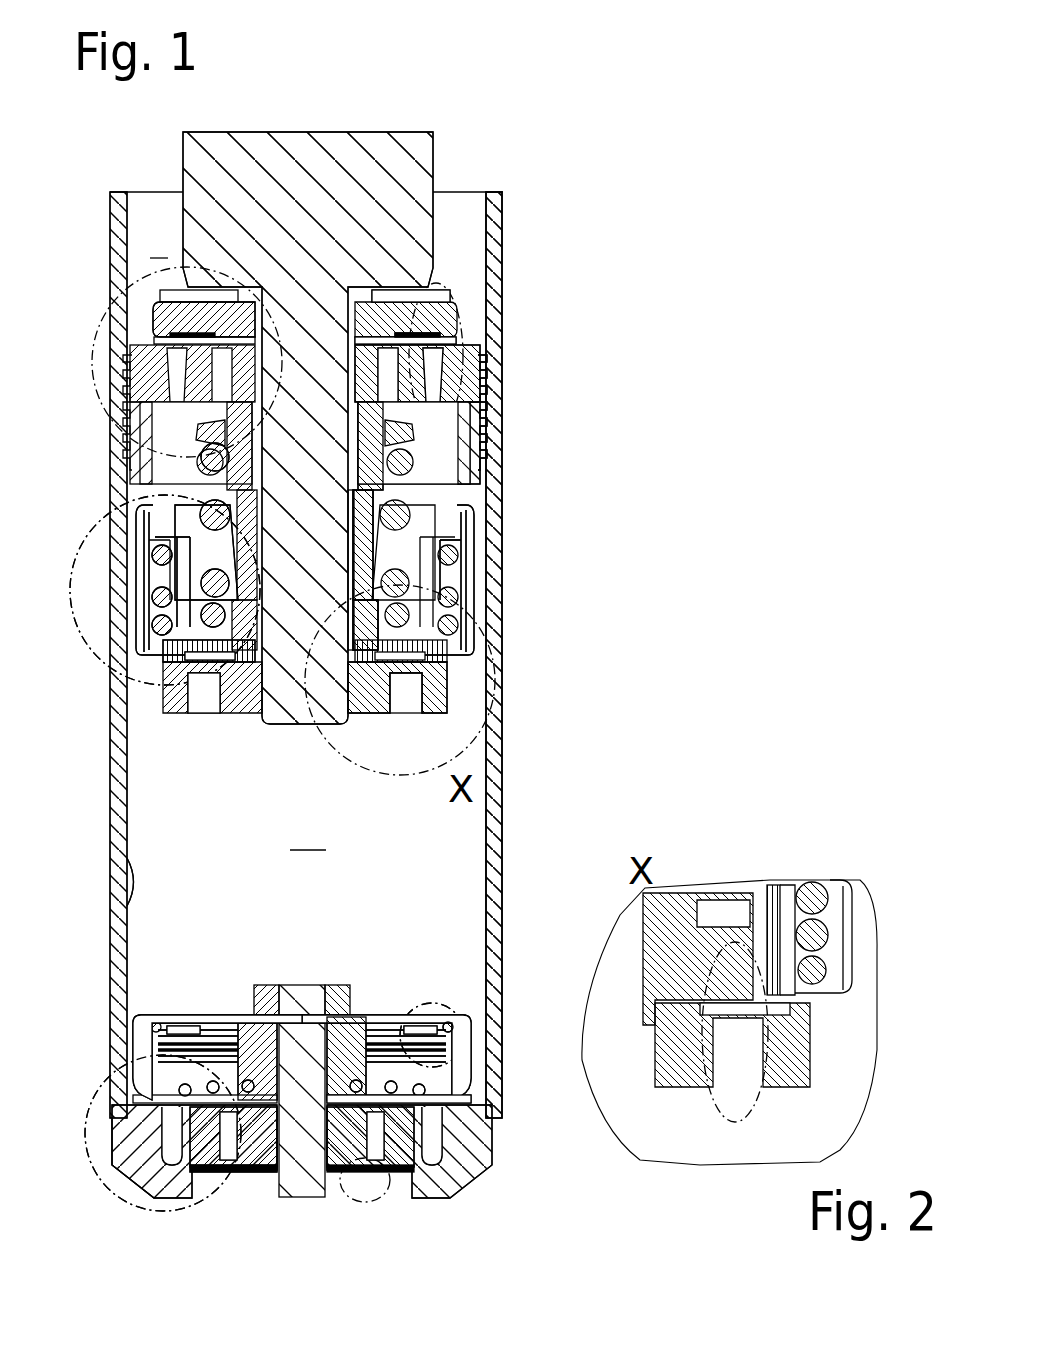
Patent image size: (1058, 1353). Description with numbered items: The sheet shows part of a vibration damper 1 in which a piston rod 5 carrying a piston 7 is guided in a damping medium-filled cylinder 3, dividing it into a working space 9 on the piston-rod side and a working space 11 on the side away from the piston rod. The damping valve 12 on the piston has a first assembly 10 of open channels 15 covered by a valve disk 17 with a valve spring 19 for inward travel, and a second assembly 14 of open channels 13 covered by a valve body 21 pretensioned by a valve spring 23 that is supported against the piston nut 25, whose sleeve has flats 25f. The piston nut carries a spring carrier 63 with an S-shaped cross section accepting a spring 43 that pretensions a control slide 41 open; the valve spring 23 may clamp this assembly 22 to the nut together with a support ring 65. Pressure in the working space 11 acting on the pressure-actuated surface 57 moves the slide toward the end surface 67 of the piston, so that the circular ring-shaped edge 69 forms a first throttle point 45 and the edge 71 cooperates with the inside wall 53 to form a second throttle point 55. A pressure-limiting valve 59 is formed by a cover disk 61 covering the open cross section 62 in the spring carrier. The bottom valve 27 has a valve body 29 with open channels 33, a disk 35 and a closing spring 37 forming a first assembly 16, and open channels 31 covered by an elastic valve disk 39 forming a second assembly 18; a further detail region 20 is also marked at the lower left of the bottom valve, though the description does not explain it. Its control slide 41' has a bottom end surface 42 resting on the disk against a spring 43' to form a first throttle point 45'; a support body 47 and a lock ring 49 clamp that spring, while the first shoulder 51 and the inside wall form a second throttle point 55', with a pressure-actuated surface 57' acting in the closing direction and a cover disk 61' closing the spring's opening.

In FIG. 1, the vibration damper 1 is at (592, 108).
In FIG. 1, the cylinder 3 is at (500, 810).
In FIG. 1, the piston rod 5 is at (384, 150).
In FIG. 1, the piston 7 is at (480, 366).
In FIG. 1, the working space on the piston-rod side 9 is at (159, 243).
In FIG. 1, the first assembly of the damping valve 10 is at (470, 400).
In FIG. 1, the working space on the side away from the piston rod 11 is at (308, 835).
In FIG. 1, the damping valve 12 is at (165, 305).
In FIG. 1, the open channels 13 is at (470, 346).
In FIG. 1, the second assembly of the damping valve 14 is at (470, 456).
In FIG. 1, the open channels 15 is at (440, 356).
In FIG. 1, the first assembly of the bottom valve 16 is at (130, 1132).
In FIG. 1, the valve disk 17 is at (456, 322).
In FIG. 1, the second assembly of the damping valve device 18 is at (375, 1175).
In FIG. 1, the valve spring 19 is at (445, 300).
In FIG. 1, the detail circle 20 is at (170, 1202).
In FIG. 1, the valve body 21 is at (455, 430).
In FIG. 1, the assembly 22 is at (98, 602).
In FIG. 1, the valve spring 23 is at (440, 476).
In FIG. 1, the piston nut 25 is at (355, 612).
In FIG. 2, the piston nut 25 is at (680, 925).
In FIG. 1, the flats 25f is at (466, 626).
In FIG. 1, the bottom valve 27 is at (432, 922).
In FIG. 1, the valve body 29 is at (472, 1152).
In FIG. 1, the open channels 31 is at (220, 1172).
In FIG. 1, the open channels 33 is at (126, 1176).
In FIG. 1, the disk 35 is at (136, 1086).
In FIG. 1, the closing spring 37 is at (232, 1060).
In FIG. 1, the elastic valve disk 39 is at (236, 1176).
In FIG. 1, the control slide 41 is at (523, 583).
In FIG. 2, the control slide 41 is at (868, 936).
In FIG. 1, the control slide 41' is at (436, 1019).
In FIG. 1, the bottom end surface 42 is at (446, 1082).
In FIG. 1, the spring 43 is at (106, 603).
In FIG. 2, the spring 43 is at (849, 907).
In FIG. 1, the spring 43' is at (458, 1028).
In FIG. 1, the first throttle point 45 is at (467, 570).
In FIG. 1, the first throttle point 45' is at (444, 1108).
In FIG. 1, the support body 47 is at (345, 1045).
In FIG. 1, the lock ring 49 is at (448, 1022).
In FIG. 1, the first shoulder 51 is at (132, 1020).
In FIG. 1, the inside wall 53 is at (132, 876).
In FIG. 1, the second throttle point 55 is at (117, 574).
In FIG. 1, the second throttle point 55' is at (151, 1045).
In FIG. 1, the pressure-actuated surface 57 is at (531, 571).
In FIG. 1, the pressure-actuated surface 57' is at (181, 1023).
In FIG. 1, the pressure-limiting valve 59 is at (178, 702).
In FIG. 2, the pressure-limiting valve 59 is at (718, 1110).
In FIG. 1, the cover disk 61 is at (164, 696).
In FIG. 2, the cover disk 61 is at (757, 901).
In FIG. 1, the cover disk 61' is at (474, 1045).
In FIG. 1, the open cross section 62 is at (215, 662).
In FIG. 2, the open cross section 62 is at (790, 1003).
In FIG. 1, the spring carrier 63 is at (176, 602).
In FIG. 2, the spring carrier 63 is at (790, 955).
In FIG. 1, the support ring 65 is at (452, 702).
In FIG. 2, the support ring 65 is at (802, 1052).
In FIG. 1, the end surface 67 is at (456, 490).
In FIG. 1, the circular ring-shaped edge 69 is at (170, 472).
In FIG. 1, the edge 71 is at (142, 536).